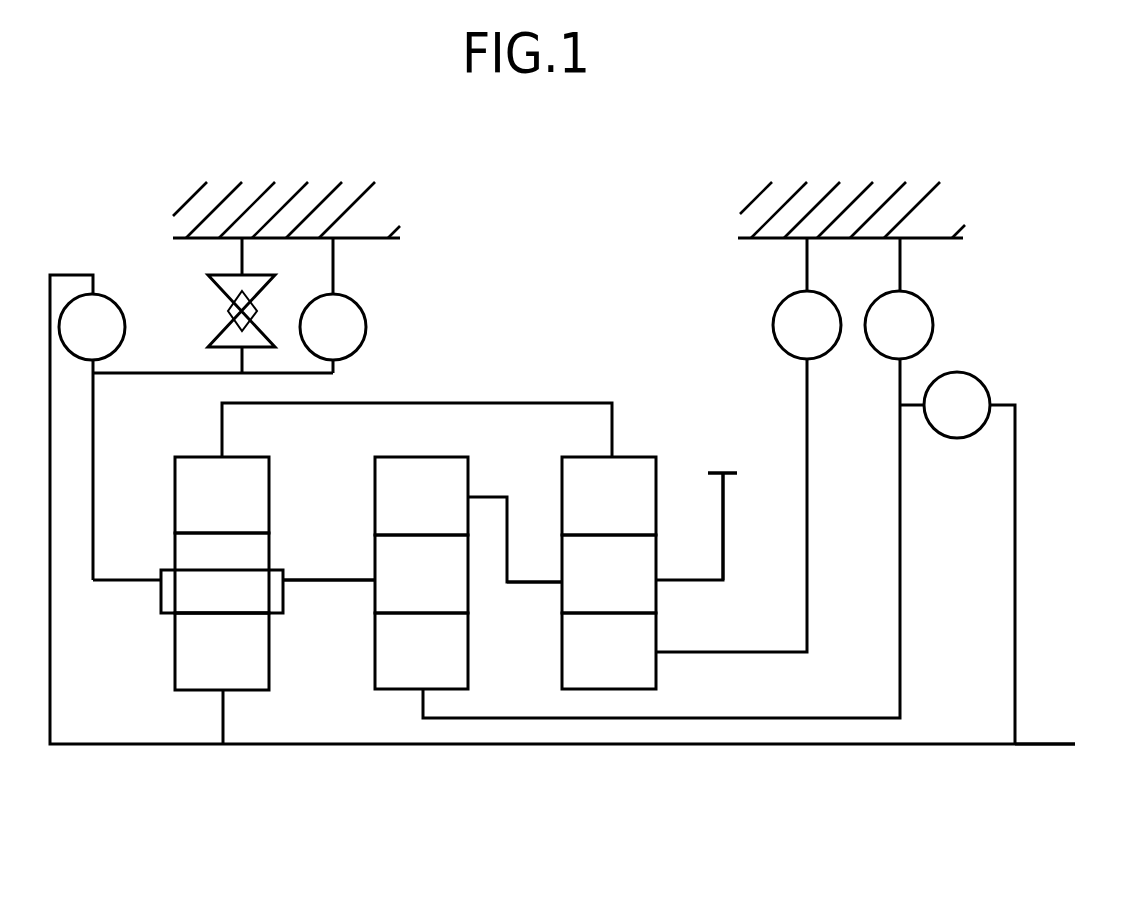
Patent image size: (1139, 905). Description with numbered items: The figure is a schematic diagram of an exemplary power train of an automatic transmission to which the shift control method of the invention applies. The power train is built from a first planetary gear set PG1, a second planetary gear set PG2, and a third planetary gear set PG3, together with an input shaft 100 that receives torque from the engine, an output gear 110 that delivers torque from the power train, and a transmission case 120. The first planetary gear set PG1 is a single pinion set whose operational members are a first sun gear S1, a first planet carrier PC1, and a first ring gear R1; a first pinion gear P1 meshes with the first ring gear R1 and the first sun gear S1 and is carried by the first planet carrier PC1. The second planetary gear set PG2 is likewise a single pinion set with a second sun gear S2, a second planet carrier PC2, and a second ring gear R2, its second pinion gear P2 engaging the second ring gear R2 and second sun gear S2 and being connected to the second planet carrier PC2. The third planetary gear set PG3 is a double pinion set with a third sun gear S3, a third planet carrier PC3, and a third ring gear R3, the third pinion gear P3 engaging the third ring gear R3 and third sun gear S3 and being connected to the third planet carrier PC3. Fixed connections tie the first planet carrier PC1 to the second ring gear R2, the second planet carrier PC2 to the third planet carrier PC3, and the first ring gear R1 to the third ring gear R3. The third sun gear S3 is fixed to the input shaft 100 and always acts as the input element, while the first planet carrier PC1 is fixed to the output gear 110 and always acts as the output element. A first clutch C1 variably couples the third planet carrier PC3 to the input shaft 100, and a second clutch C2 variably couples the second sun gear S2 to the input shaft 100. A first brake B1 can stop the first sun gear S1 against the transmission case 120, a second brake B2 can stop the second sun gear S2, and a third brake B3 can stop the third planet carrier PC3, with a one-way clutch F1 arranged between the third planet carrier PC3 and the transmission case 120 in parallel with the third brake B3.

The input shaft 100 is at (1032, 745).
The output gear 110 is at (735, 477).
The transmission case 120 is at (393, 217).
The first planetary gear set PG1 is at (588, 498).
The second planetary gear set PG2 is at (390, 498).
The third planetary gear set PG3 is at (195, 534).
The first ring gear R1 is at (609, 496).
The first pinion gear P1 is at (609, 574).
The first sun gear S1 is at (609, 651).
The first planet carrier PC1 is at (534, 564).
The second ring gear R2 is at (421, 496).
The second pinion gear P2 is at (421, 574).
The second sun gear S2 is at (421, 651).
The second planet carrier PC2 is at (329, 563).
The third ring gear R3 is at (222, 495).
The third pinion gear P3 is at (222, 573).
The third sun gear S3 is at (222, 651).
The third planet carrier PC3 is at (195, 580).
The first clutch C1 is at (92, 327).
The second clutch C2 is at (957, 405).
The first brake B1 is at (807, 325).
The second brake B2 is at (899, 325).
The third brake B3 is at (333, 327).
The one-way clutch F1 is at (241, 311).